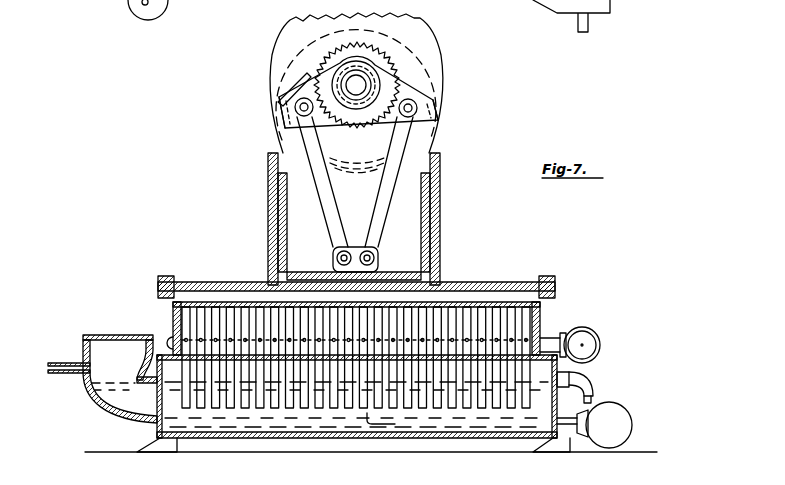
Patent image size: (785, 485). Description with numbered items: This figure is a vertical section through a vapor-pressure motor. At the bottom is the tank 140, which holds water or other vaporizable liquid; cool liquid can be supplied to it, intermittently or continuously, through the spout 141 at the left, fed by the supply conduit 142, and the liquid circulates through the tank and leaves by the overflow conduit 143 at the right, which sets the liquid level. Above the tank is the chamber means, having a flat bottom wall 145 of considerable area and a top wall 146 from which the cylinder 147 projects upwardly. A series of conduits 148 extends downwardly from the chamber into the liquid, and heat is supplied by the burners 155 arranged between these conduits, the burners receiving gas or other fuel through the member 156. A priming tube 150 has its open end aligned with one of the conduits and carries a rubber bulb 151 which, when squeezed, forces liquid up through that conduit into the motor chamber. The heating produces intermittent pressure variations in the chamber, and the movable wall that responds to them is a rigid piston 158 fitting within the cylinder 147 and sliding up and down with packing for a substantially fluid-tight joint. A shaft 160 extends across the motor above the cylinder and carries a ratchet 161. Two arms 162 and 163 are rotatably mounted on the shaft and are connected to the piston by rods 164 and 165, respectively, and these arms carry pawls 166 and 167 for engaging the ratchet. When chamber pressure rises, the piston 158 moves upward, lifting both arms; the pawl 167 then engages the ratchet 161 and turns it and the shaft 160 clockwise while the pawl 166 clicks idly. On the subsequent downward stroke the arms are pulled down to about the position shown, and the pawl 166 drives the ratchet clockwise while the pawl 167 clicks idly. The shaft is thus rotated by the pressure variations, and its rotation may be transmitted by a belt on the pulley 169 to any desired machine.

The tank 140 is at (278, 437).
The spout 141 is at (83, 350).
The supply conduit 142 is at (78, 377).
The overflow conduit 143 is at (594, 381).
The bottom wall 145 is at (349, 304).
The top wall 146 is at (488, 282).
The cylinder 147 is at (440, 223).
The conduits 148 is at (180, 320).
The priming tube 150 is at (380, 424).
The rubber bulb 151 is at (633, 418).
The burners 155 is at (176, 338).
The member 156 is at (598, 332).
The piston 158 is at (400, 272).
The shaft 160 is at (356, 85).
The ratchet 161 is at (383, 47).
The arm 162 is at (420, 96).
The arm 163 is at (283, 113).
The rod 164 is at (388, 185).
The rod 165 is at (334, 223).
The pawl 166 is at (382, 127).
The pawl 167 is at (300, 80).
The pulley 169 is at (437, 101).